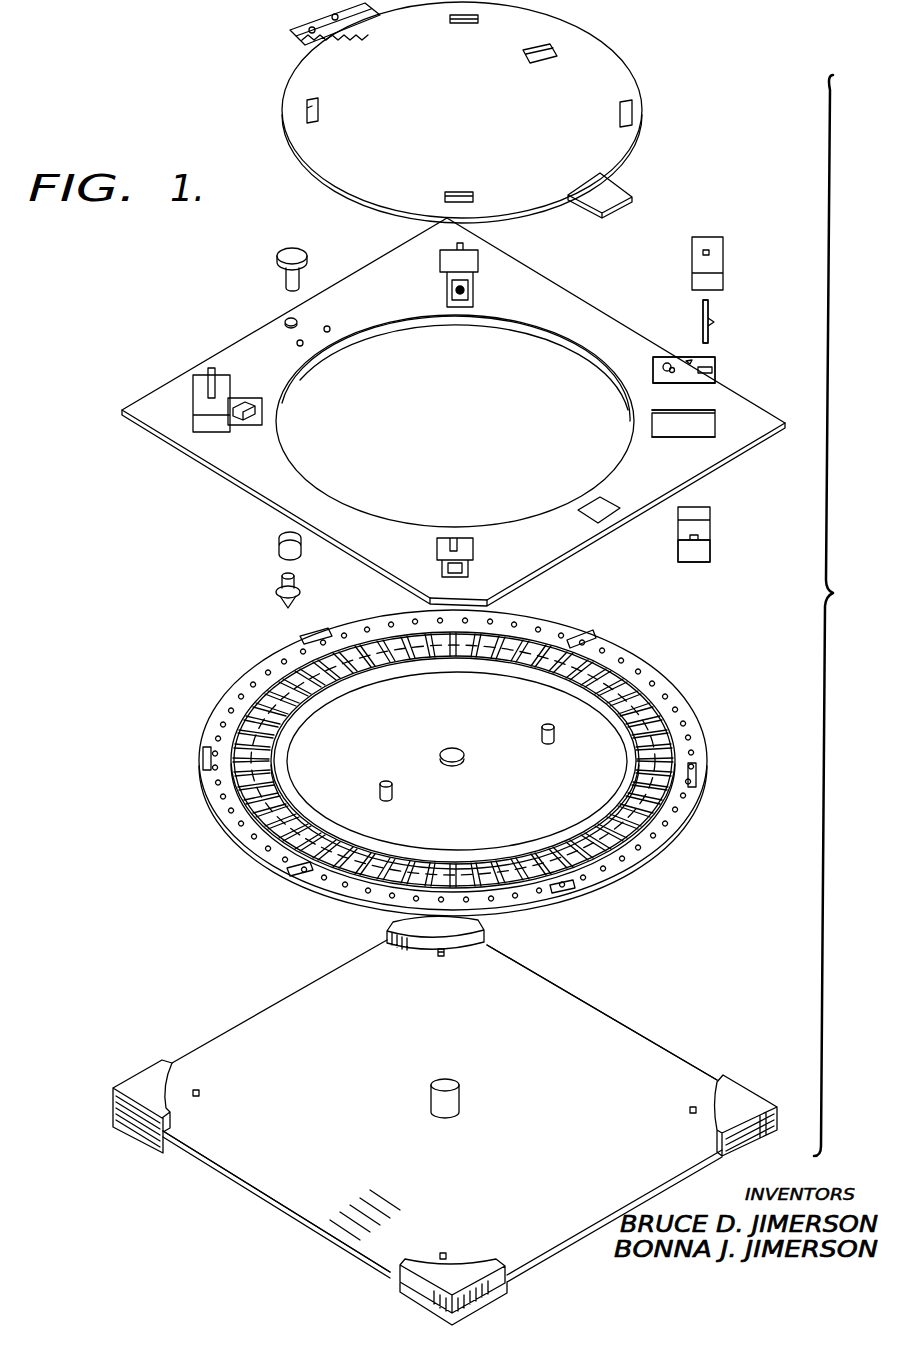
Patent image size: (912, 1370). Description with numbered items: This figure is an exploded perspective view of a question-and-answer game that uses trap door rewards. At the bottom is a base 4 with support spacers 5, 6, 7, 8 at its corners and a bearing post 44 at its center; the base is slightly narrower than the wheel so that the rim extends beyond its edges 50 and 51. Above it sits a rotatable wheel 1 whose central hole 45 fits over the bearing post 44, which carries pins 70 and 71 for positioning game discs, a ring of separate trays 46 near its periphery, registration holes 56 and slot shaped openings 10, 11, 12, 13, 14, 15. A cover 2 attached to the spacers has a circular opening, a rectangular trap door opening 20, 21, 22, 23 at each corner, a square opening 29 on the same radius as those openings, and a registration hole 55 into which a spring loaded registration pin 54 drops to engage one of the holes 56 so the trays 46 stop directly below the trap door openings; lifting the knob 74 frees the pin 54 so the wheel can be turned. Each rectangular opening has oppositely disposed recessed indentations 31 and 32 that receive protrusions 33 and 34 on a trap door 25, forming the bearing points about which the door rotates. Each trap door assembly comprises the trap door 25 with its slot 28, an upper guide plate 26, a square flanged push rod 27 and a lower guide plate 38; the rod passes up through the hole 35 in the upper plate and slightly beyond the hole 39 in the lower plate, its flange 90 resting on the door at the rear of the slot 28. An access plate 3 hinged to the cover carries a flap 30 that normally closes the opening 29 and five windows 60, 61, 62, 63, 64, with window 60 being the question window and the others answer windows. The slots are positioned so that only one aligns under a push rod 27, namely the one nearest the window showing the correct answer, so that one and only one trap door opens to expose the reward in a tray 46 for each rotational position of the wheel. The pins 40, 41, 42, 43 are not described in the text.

The rotatable wheel 1 is at (462, 828).
The cover 2 is at (376, 551).
The access plate 3 is at (462, 112).
The base 4 is at (562, 1173).
The support spacer 5 is at (410, 1280).
The support spacer 6 is at (750, 1095).
The support spacer 7 is at (390, 926).
The support spacer 8 is at (150, 1078).
The slot shaped opening 10 is at (595, 634).
The slot shaped opening 11 is at (696, 778).
The slot shaped opening 12 is at (565, 892).
The slot shaped opening 13 is at (292, 876).
The slot shaped opening 14 is at (203, 762).
The slot shaped opening 15 is at (316, 631).
The trap door opening 20 is at (470, 540).
The trap door opening 21 is at (668, 438).
The trap door opening 22 is at (478, 292).
The trap door opening 23 is at (252, 426).
The trap door 25 is at (653, 367).
The upper guide plate 26 is at (716, 240).
The flanged push rod 27 is at (700, 320).
The slot 28 is at (716, 368).
The square opening 29 is at (595, 507).
The flap 30 is at (630, 191).
The recessed indentation 31 is at (693, 412).
The recessed indentation 32 is at (683, 438).
The protrusion 33 is at (700, 355).
The protrusion 34 is at (694, 385).
The hole 35 is at (710, 254).
The lower guide plate 38 is at (705, 565).
The hole 39 is at (705, 537).
The pin 40 is at (440, 1254).
The pin 41 is at (688, 1110).
The pin 42 is at (201, 1092).
The pin 43 is at (442, 958).
The bearing post 44 is at (460, 1100).
The hole 45 is at (466, 756).
The trays 46 is at (630, 830).
The edge 50 is at (298, 1215).
The edge 51 is at (598, 1010).
The registration pin 54 is at (276, 594).
The registration hole 55 is at (287, 320).
The registration holes 56 is at (236, 713).
The window 60 is at (556, 58).
The window 61 is at (466, 21).
The window 62 is at (630, 113).
The window 63 is at (309, 111).
The window 64 is at (474, 198).
The pin 70 is at (383, 782).
The pin 71 is at (547, 724).
The knob 74 is at (277, 260).
The flange 90 is at (715, 323).